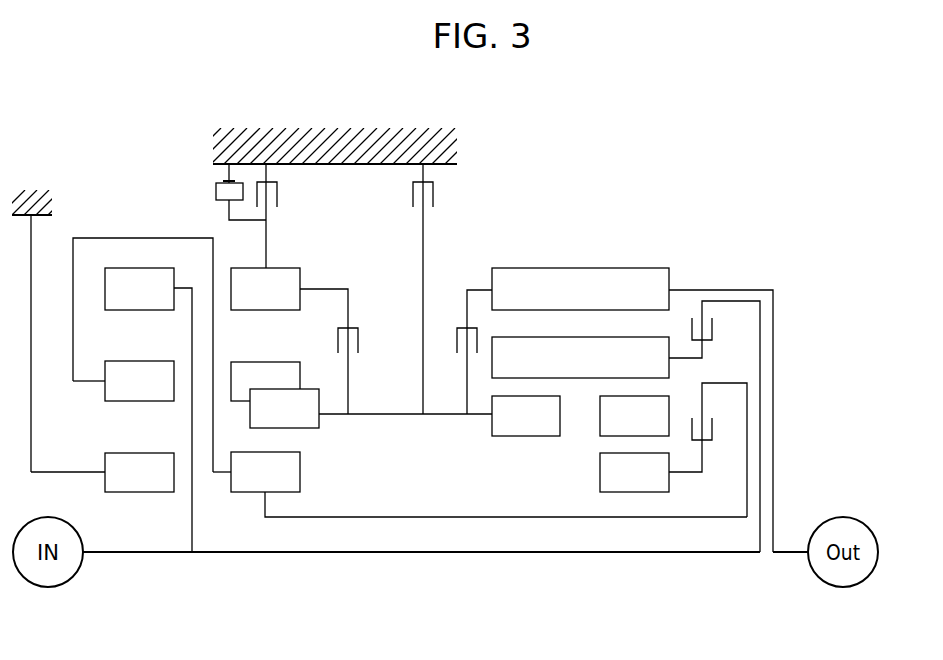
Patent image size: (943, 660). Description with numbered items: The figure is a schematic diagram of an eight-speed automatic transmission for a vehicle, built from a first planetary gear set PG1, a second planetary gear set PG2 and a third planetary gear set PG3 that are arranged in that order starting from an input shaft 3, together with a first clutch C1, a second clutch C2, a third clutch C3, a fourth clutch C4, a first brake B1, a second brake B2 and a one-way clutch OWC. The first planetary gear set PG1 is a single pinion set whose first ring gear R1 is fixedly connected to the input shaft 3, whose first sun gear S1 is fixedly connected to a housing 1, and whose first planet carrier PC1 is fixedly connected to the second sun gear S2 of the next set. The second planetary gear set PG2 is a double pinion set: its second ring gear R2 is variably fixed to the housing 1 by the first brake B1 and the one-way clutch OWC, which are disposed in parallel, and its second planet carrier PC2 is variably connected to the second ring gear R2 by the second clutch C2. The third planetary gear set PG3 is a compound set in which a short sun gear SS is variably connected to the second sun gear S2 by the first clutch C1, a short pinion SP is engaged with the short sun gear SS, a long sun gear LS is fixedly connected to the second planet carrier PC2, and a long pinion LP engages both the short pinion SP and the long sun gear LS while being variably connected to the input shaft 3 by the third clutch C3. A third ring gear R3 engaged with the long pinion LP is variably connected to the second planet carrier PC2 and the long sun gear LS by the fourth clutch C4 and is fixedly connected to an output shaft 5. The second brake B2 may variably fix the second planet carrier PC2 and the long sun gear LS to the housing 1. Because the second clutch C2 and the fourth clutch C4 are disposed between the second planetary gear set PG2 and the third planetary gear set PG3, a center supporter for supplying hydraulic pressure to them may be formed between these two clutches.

The housing 1 is at (445, 148).
The input shaft 3 is at (145, 554).
The output shaft 5 is at (790, 554).
The first planetary gear set PG1 is at (122, 361).
The second planetary gear set PG2 is at (480, 381).
The third planetary gear set PG3 is at (658, 404).
The first sun gear S1 is at (135, 492).
The first planet carrier PC1 is at (85, 381).
The first ring gear R1 is at (141, 310).
The second sun gear S2 is at (243, 492).
The second planet carrier PC2 is at (333, 416).
The second ring gear R2 is at (267, 310).
The third ring gear R3 is at (645, 268).
The long pinion LP is at (660, 337).
The long sun gear LS is at (527, 436).
The short pinion SP is at (669, 407).
The short sun gear SS is at (648, 492).
The first clutch C1 is at (708, 450).
The second clutch C2 is at (344, 351).
The third clutch C3 is at (714, 426).
The fourth clutch C4 is at (461, 352).
The first brake B1 is at (280, 216).
The second brake B2 is at (437, 289).
The one-way clutch OWC is at (216, 192).